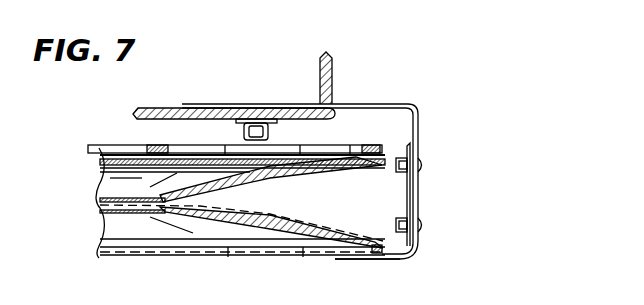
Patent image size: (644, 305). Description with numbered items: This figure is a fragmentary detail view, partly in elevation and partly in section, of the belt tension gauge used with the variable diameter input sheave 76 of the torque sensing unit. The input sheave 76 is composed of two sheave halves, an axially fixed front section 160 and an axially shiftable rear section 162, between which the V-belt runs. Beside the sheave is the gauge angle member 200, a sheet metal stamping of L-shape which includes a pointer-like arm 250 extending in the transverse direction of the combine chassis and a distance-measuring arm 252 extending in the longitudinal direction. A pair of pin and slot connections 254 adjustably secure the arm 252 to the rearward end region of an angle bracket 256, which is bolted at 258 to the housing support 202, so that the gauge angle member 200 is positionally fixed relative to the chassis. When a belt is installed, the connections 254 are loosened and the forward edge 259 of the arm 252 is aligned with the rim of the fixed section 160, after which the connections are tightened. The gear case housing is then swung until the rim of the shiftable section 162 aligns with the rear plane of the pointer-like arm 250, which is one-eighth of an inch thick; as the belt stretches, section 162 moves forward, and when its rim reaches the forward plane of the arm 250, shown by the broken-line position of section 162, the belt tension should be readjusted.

The variable diameter input sheave 76 is at (88, 148).
The axially fixed front section 160 is at (135, 148).
The axially shiftable rear section 162 is at (137, 254).
The gauge angle member 200 is at (420, 255).
The housing support 202 is at (178, 88).
The pointer-like arm 250 is at (388, 259).
The distance-measuring arm 252 is at (406, 193).
The pin and slot connections 254 is at (421, 170).
The angle bracket 256 is at (418, 120).
The bolt 258 is at (258, 121).
The forward edge of the arm 259 is at (411, 140).